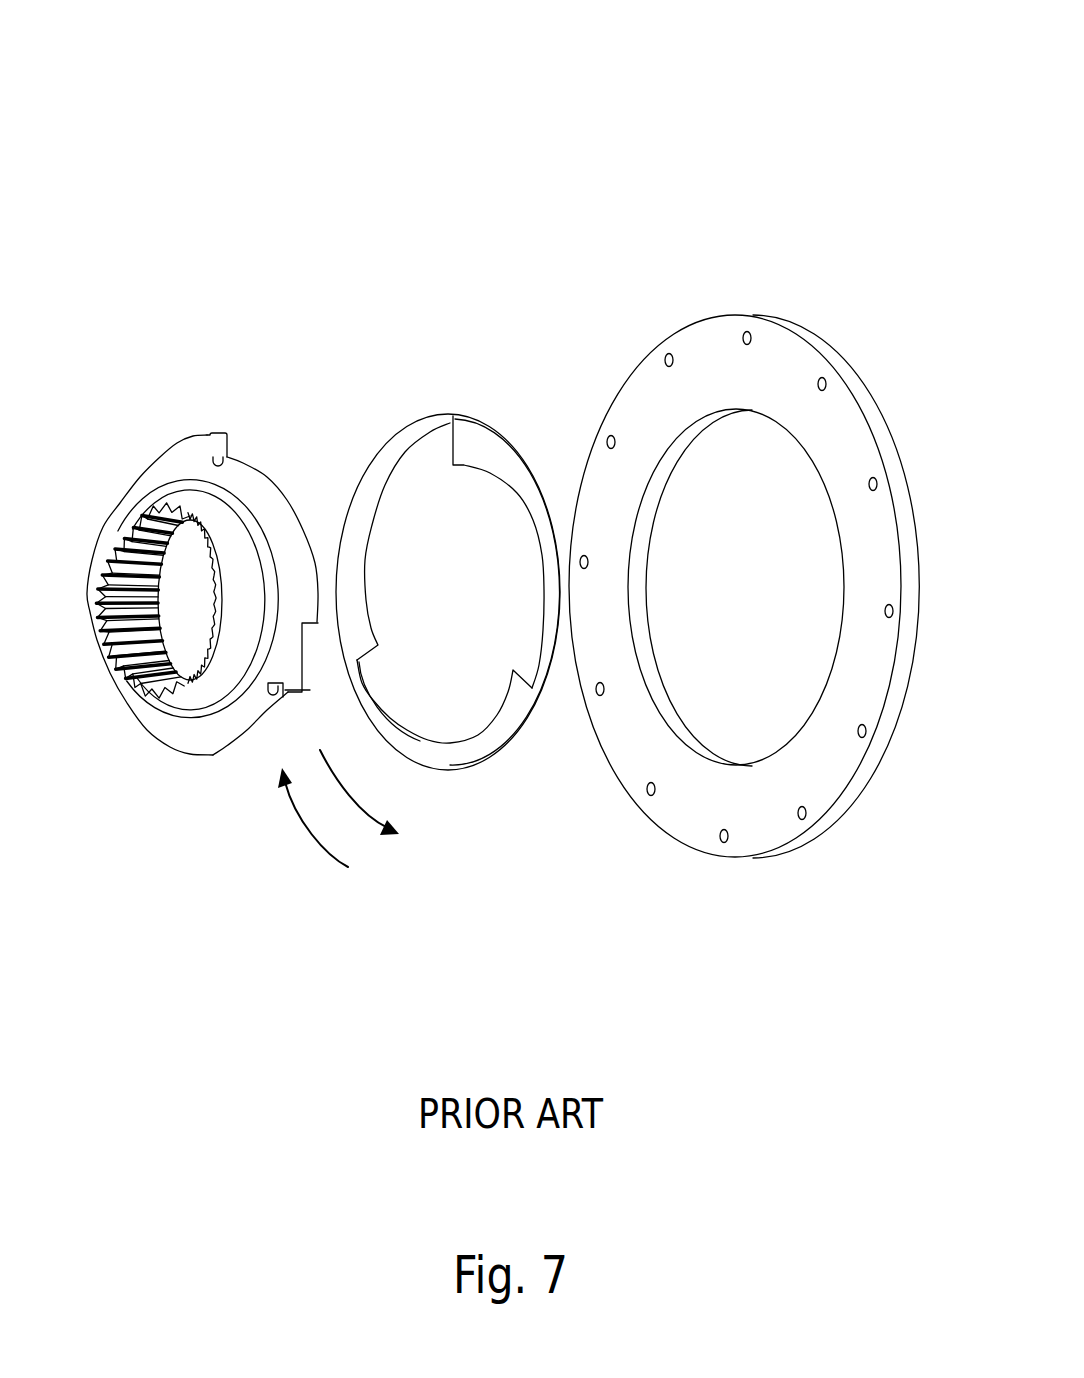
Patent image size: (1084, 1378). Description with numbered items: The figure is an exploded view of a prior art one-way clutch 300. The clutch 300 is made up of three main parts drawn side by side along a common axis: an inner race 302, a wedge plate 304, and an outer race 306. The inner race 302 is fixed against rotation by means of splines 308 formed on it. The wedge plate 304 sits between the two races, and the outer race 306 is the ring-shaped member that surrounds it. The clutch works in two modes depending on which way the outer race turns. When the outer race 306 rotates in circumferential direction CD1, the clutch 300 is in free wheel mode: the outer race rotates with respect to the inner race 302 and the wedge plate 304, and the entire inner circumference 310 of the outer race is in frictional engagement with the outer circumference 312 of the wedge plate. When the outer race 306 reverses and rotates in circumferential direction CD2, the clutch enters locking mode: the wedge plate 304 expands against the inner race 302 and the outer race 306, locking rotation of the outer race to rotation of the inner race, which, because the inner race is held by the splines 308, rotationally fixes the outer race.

The one-way clutch 300 is at (669, 130).
The inner race 302 is at (180, 425).
The wedge plate 304 is at (408, 408).
The outer race 306 is at (610, 378).
The splines 308 is at (132, 513).
The inner circumference 310 is at (775, 753).
The outer circumference 312 is at (453, 770).
The circumferential direction CD1 is at (352, 810).
The circumferential direction CD2 is at (306, 835).